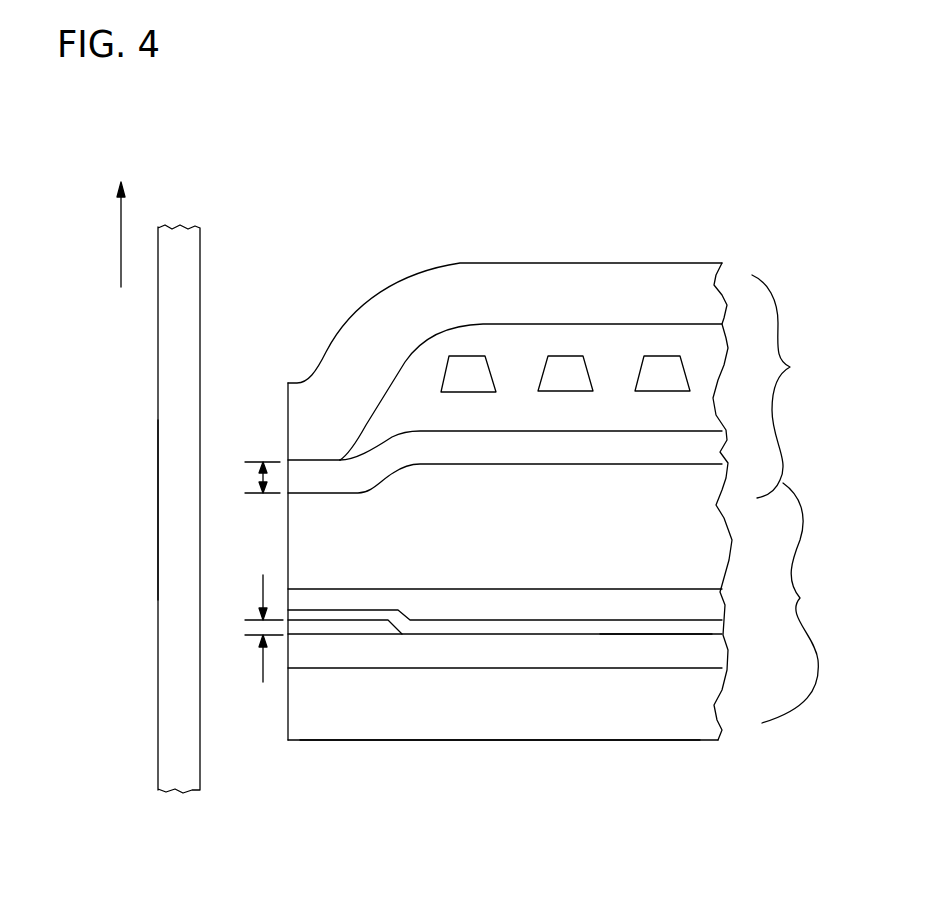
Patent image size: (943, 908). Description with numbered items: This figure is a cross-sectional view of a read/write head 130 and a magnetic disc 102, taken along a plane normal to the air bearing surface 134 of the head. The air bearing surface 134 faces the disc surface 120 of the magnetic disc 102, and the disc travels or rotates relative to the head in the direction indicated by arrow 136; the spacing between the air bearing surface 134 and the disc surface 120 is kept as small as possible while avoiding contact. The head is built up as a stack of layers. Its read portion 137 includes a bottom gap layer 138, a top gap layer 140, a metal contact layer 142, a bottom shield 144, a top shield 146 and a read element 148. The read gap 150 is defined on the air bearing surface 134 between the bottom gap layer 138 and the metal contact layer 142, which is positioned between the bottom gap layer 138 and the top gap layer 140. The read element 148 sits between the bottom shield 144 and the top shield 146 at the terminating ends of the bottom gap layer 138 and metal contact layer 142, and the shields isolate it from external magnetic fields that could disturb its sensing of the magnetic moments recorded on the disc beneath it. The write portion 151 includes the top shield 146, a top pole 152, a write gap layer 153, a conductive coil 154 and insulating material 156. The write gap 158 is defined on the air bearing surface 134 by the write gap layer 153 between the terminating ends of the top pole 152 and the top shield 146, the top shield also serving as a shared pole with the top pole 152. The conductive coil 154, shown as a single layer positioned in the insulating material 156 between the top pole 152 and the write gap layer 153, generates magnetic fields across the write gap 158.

The magnetic disc 102 is at (177, 324).
The disc surface 120 is at (198, 242).
The read/write head 130 is at (732, 245).
The air bearing surface 134 is at (285, 403).
The arrow 136 is at (99, 234).
The read portion 137 is at (807, 603).
The bottom gap layer 138 is at (650, 663).
The top gap layer 140 is at (636, 617).
The metal contact layer 142 is at (712, 627).
The bottom shield 144 is at (636, 717).
The top shield 146 is at (636, 541).
The read element 148 is at (348, 628).
The read gap 150 is at (248, 628).
The write portion 151 is at (795, 386).
The top pole 152 is at (581, 303).
The write gap layer 153 is at (640, 459).
The conductive coil 154 is at (648, 383).
The insulating material 156 is at (700, 424).
The write gap 158 is at (241, 477).